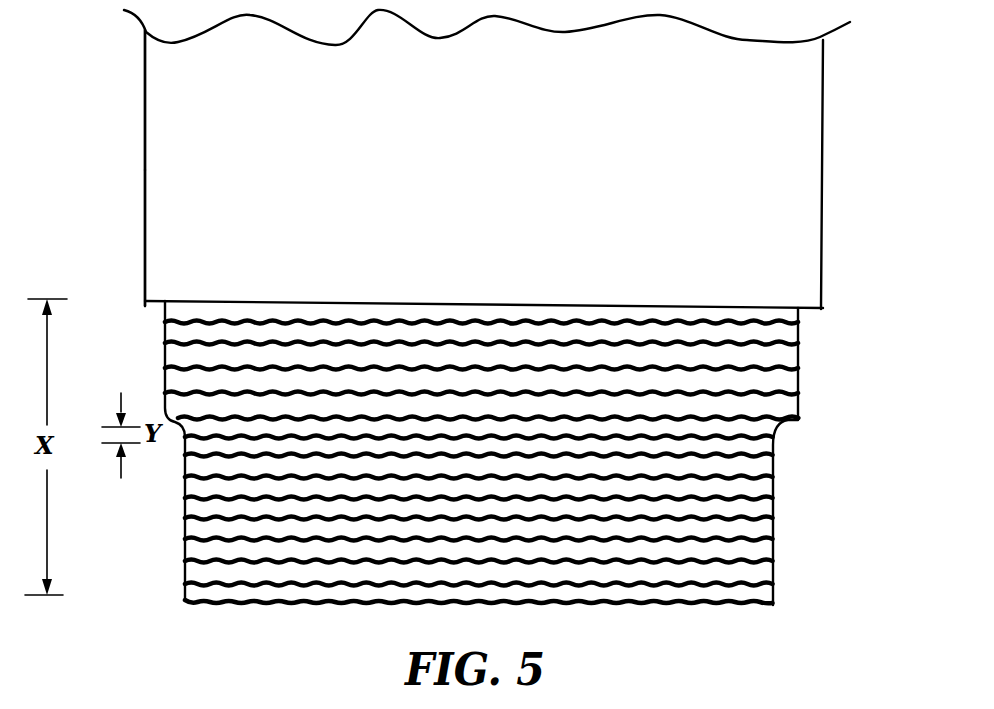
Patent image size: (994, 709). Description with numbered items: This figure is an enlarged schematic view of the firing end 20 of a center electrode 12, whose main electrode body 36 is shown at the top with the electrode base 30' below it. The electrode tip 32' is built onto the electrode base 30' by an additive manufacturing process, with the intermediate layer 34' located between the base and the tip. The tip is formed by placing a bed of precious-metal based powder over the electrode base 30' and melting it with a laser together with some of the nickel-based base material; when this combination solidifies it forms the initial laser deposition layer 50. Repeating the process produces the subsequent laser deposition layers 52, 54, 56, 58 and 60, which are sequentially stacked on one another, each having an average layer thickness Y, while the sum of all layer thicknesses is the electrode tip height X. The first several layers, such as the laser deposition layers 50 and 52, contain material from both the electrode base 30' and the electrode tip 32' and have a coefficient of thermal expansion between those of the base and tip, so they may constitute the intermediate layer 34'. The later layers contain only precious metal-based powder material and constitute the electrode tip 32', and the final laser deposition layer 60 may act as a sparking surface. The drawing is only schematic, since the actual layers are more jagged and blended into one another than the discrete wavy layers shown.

The center electrode 12 is at (842, 104).
The firing end 20 is at (840, 368).
The electrode base 30' is at (114, 238).
The electrode tip 32' is at (176, 518).
The intermediate layer 34' is at (122, 369).
The main electrode body 36 is at (168, 79).
The initial laser deposition layer 50 is at (783, 312).
The laser deposition layer 52 is at (800, 336).
The laser deposition layer 54 is at (796, 402).
The laser deposition layer 56 is at (779, 428).
The laser deposition layer 58 is at (744, 580).
The final laser deposition layer 60 is at (774, 592).